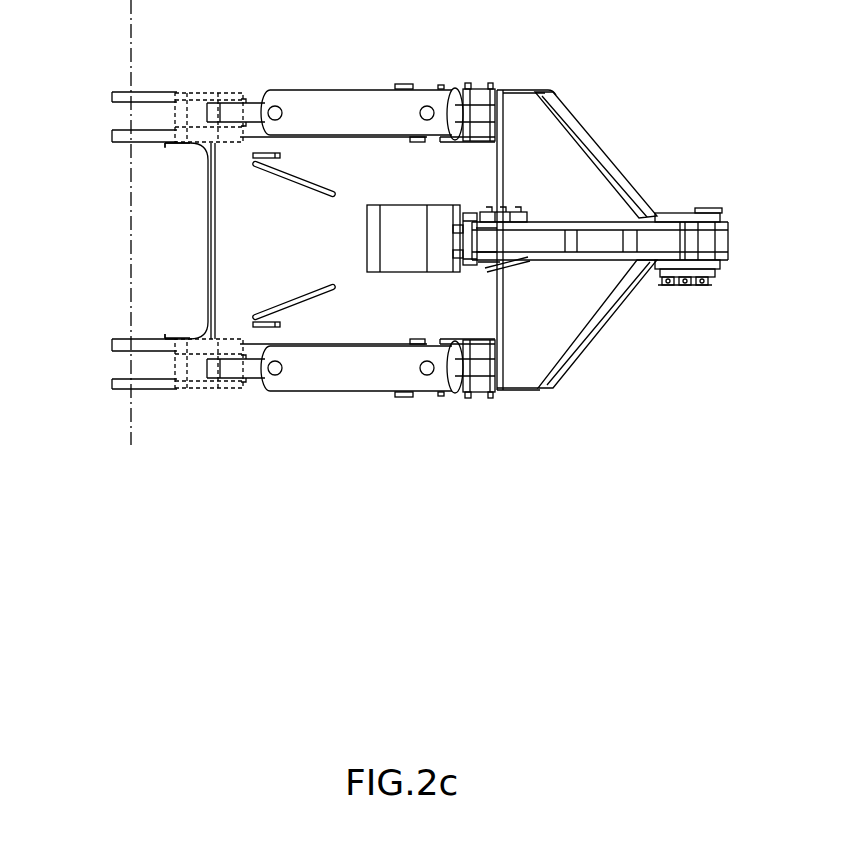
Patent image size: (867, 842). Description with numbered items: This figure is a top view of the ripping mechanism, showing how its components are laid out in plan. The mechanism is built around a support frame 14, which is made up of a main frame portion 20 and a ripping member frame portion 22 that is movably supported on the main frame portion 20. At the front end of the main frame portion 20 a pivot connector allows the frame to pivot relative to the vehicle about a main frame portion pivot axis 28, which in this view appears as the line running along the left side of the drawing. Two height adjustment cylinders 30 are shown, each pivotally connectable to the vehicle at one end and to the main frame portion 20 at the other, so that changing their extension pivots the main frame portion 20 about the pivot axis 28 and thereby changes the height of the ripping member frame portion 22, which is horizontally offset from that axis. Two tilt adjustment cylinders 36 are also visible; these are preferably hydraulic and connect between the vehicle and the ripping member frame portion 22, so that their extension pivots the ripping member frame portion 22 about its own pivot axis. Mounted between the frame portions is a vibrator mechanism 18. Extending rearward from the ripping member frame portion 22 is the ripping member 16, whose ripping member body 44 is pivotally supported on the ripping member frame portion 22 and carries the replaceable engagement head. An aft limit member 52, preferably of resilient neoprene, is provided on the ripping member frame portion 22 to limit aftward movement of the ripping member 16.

The support frame 14 is at (211, 193).
The ripping member 16 is at (553, 228).
The vibrator mechanism 18 is at (403, 238).
The main frame portion 20 is at (211, 233).
The ripping member frame portion 22 is at (558, 110).
The main frame portion pivot axis 28 is at (128, 430).
The height adjustment cylinder 30 is at (255, 100).
The tilt adjustment cylinder 36 is at (327, 107).
The ripping member body 44 is at (588, 240).
The aft limit member 52 is at (657, 240).